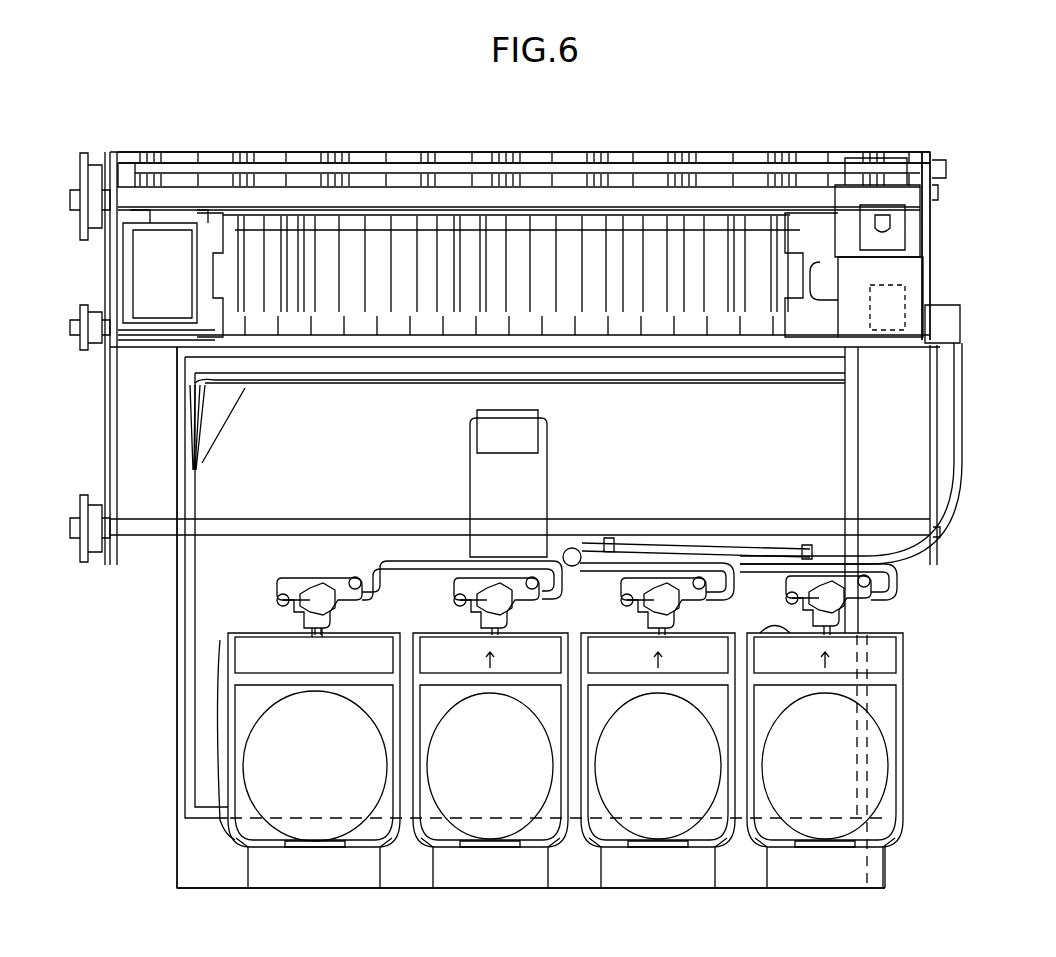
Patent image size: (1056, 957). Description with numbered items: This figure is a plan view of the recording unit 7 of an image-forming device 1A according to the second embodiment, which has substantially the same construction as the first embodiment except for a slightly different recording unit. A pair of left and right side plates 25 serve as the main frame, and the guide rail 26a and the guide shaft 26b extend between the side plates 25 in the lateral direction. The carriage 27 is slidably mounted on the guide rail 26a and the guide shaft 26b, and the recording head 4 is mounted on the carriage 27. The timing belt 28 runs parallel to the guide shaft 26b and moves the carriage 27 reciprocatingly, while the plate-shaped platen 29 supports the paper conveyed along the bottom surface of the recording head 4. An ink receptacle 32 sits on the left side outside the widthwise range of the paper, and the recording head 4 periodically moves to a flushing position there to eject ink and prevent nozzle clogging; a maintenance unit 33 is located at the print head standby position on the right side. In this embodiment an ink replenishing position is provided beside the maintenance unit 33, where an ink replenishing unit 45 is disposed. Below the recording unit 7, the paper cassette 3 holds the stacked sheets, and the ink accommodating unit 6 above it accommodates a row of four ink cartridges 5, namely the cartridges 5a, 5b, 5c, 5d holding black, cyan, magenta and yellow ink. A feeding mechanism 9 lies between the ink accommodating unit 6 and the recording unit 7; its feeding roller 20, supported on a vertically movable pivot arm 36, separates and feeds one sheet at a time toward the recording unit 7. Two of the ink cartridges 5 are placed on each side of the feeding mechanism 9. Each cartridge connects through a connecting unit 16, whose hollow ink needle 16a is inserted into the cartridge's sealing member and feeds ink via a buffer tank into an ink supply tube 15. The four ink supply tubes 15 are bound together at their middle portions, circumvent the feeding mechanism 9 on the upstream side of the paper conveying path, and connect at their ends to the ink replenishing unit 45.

The image-forming device 1A is at (846, 87).
The recording unit 7 is at (816, 150).
The timing belt 28 is at (235, 172).
The guide shaft 26b is at (335, 200).
The platen 29 is at (530, 262).
The ink receptacle 32 is at (150, 262).
The guide rail 26a is at (150, 340).
The recording head 4 is at (910, 289).
The carriage 27 is at (951, 273).
The maintenance unit 33 is at (935, 300).
The ink replenishing unit 45 is at (950, 322).
The side plates 25 is at (110, 452).
The feeding mechanism 9 is at (454, 492).
The pivot arm 36 is at (535, 482).
The feeding roller 20 is at (525, 430).
The ink supply tubes 15 is at (750, 570).
The connecting units 16 is at (322, 600).
The ink needle 16a is at (303, 630).
The paper cassette 3 is at (170, 636).
The ink accommodating unit 6 is at (221, 846).
The ink cartridges 5 is at (565, 760).
The ink cartridge 5a is at (300, 828).
The ink cartridge 5b is at (486, 828).
The ink cartridge 5c is at (652, 828).
The ink cartridge 5d is at (812, 828).